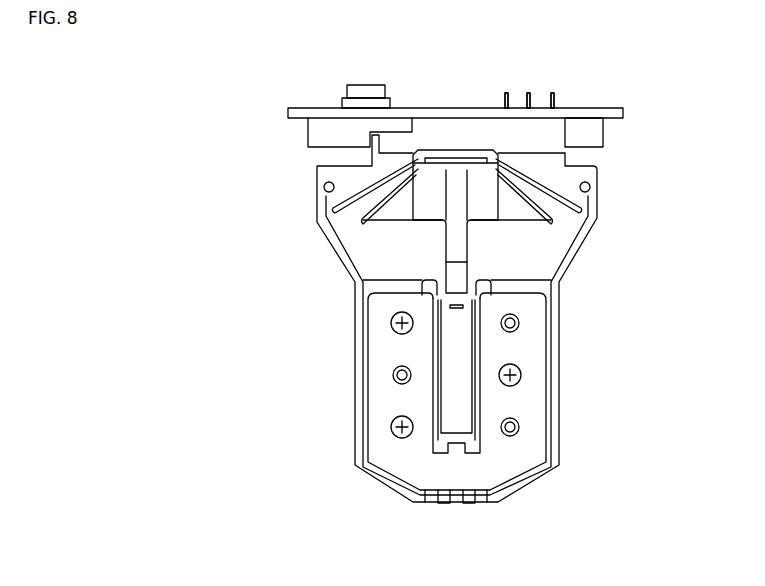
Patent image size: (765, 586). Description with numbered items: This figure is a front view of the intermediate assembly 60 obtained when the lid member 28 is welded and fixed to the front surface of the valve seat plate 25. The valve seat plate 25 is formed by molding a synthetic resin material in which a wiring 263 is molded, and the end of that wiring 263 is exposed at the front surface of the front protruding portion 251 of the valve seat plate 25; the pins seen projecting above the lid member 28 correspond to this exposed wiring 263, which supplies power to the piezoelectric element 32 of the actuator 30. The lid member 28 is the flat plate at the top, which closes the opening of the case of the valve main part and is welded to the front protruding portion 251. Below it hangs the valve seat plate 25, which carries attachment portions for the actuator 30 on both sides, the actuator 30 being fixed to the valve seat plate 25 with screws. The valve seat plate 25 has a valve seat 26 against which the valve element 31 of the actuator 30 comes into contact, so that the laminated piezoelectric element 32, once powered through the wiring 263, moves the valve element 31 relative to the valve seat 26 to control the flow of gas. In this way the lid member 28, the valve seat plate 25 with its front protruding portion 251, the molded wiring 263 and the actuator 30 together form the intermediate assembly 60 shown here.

The valve seat plate 25 is at (556, 360).
The valve seat 26 is at (441, 152).
The lid member 28 is at (308, 111).
The actuator 30 is at (380, 396).
The valve element 31 is at (472, 161).
The laminated piezoelectric element 32 is at (456, 378).
The intermediate assembly 60 is at (589, 72).
The front protruding portion 251 is at (556, 123).
The wiring 263 is at (556, 102).